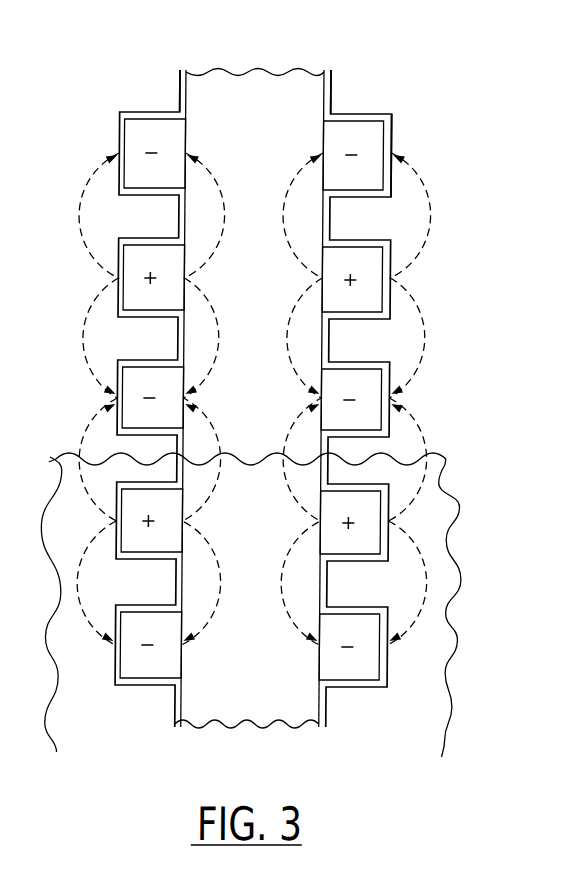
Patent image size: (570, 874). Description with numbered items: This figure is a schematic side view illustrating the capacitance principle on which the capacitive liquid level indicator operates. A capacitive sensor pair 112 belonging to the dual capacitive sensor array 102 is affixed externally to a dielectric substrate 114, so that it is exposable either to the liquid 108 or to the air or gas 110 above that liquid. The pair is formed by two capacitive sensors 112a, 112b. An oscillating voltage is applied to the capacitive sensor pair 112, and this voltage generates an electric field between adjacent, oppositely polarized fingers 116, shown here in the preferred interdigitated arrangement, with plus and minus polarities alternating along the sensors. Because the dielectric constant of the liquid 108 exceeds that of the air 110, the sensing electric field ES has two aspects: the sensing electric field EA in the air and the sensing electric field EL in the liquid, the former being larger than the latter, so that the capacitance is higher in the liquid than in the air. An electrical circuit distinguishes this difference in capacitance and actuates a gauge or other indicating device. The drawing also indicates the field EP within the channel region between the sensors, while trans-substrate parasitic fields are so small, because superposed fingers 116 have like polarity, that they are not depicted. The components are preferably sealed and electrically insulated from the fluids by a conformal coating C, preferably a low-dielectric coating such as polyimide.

The dual capacitive sensor array 102 is at (330, 756).
The liquid 108 is at (440, 711).
The air (or gas) 110 is at (115, 87).
The capacitive sensor pair 112 is at (205, 655).
The capacitive sensor 112a is at (384, 60).
The capacitive sensor 112b is at (166, 95).
The dielectric substrate 114 is at (272, 730).
The fingers (plates) 116 is at (178, 242).
The conformal coating C is at (393, 130).
The primary electric field EP is at (285, 243).
The sensing electric field in air EA is at (440, 272).
The sensing electric field ES is at (461, 393).
The sensing electric field in liquid EL is at (411, 553).